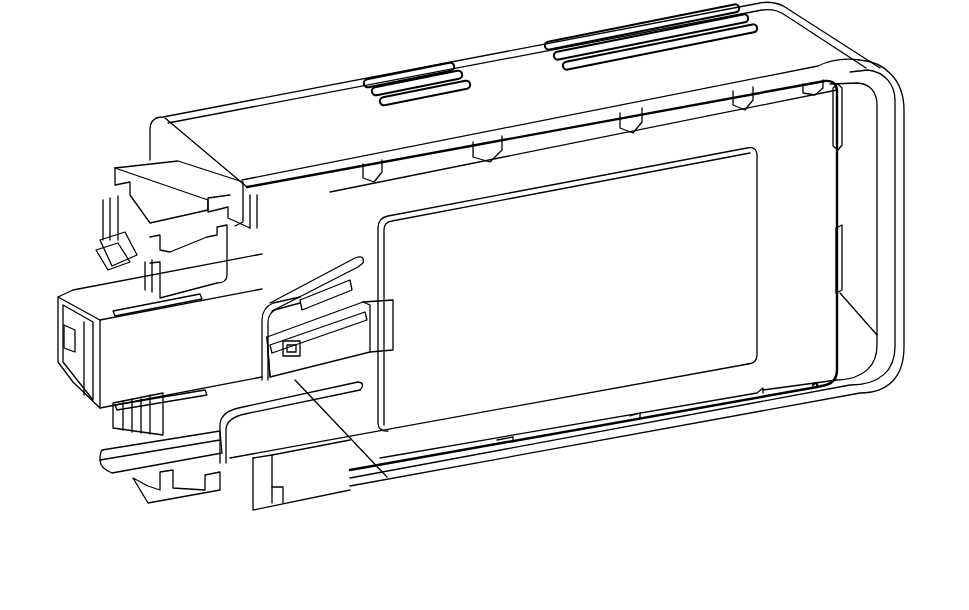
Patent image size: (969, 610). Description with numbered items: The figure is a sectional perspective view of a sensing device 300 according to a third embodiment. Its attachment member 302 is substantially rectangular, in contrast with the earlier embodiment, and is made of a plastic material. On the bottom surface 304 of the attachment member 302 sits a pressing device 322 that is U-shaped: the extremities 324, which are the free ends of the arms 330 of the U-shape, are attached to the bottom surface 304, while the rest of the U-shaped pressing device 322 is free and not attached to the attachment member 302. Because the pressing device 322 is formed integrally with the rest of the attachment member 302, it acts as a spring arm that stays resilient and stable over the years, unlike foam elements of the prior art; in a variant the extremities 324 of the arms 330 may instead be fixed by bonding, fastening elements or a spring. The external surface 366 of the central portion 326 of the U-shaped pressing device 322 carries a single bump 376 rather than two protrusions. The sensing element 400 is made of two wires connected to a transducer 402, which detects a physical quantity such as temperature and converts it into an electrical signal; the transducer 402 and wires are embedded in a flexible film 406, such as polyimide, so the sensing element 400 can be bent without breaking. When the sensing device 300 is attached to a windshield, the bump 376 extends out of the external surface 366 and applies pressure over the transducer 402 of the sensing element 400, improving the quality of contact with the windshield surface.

The sensing device 300 is at (195, 40).
The attachment member 302 is at (802, 360).
The bottom surface 304 is at (692, 352).
The pressing device 322 is at (290, 312).
The extremities 324 is at (368, 368).
The central portion 326 is at (268, 318).
The arms 330 is at (317, 295).
The external surface 366 is at (338, 287).
The bump 376 is at (285, 336).
The sensing element 400 is at (332, 337).
The transducer 402 is at (292, 352).
The flexible film 406 is at (308, 347).